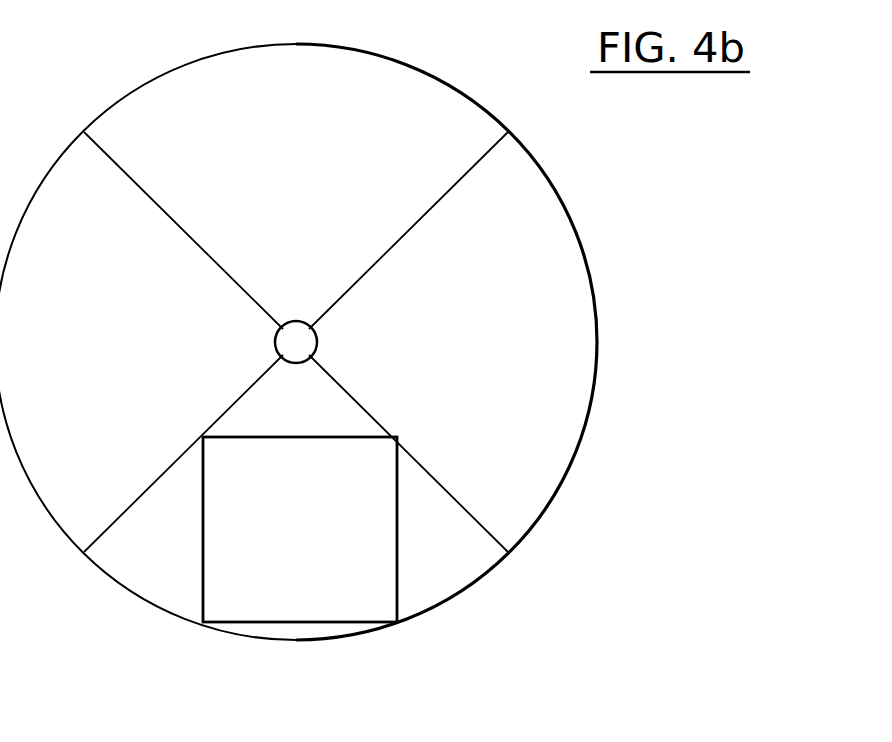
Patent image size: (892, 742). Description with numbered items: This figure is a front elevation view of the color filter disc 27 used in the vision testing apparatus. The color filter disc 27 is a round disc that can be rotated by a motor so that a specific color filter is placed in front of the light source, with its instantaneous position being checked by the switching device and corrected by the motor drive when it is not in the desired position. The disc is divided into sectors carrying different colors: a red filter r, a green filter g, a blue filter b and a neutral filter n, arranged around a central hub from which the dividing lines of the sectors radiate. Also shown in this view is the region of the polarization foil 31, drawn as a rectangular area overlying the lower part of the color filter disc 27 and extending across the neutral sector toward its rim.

The color filter disc 27 is at (598, 243).
The polarization foil 31 is at (370, 578).
The neutral filter n is at (470, 562).
The green filter segment g is at (303, 175).
The red filter r is at (117, 345).
The blue filter b is at (474, 350).